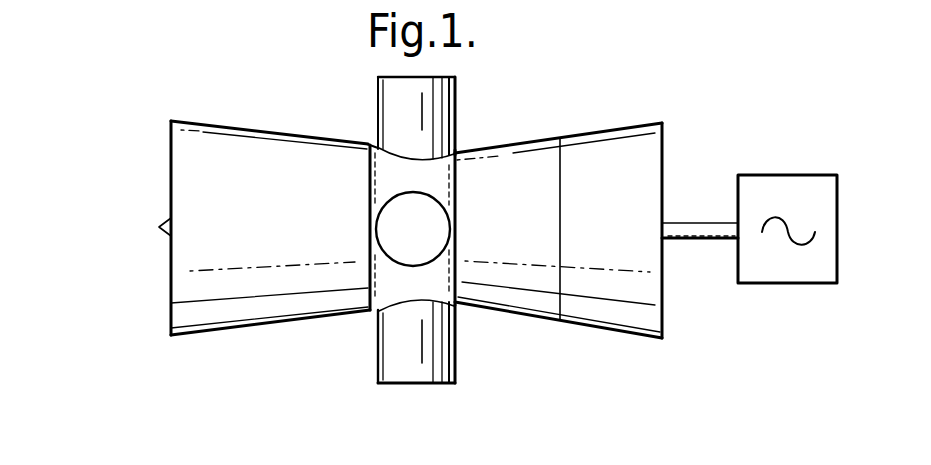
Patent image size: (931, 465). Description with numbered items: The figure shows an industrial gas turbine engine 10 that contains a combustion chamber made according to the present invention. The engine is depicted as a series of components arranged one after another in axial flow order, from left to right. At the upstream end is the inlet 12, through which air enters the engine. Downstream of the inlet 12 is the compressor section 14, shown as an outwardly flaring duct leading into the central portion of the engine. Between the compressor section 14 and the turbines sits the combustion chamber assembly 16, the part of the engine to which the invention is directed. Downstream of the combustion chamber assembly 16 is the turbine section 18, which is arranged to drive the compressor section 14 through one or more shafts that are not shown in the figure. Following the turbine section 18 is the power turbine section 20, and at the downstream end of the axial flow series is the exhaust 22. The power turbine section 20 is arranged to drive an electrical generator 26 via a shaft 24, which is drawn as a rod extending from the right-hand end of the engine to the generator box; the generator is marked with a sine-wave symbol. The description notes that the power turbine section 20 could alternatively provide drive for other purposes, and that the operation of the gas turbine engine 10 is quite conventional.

The industrial gas turbine engine 10 is at (600, 125).
The inlet 12 is at (171, 159).
The compressor section 14 is at (269, 153).
The combustion chamber assembly 16 is at (393, 113).
The turbine section 18 is at (500, 300).
The power turbine section 20 is at (615, 305).
The exhaust 22 is at (664, 311).
The shaft 24 is at (700, 226).
The electrical generator 26 is at (793, 183).